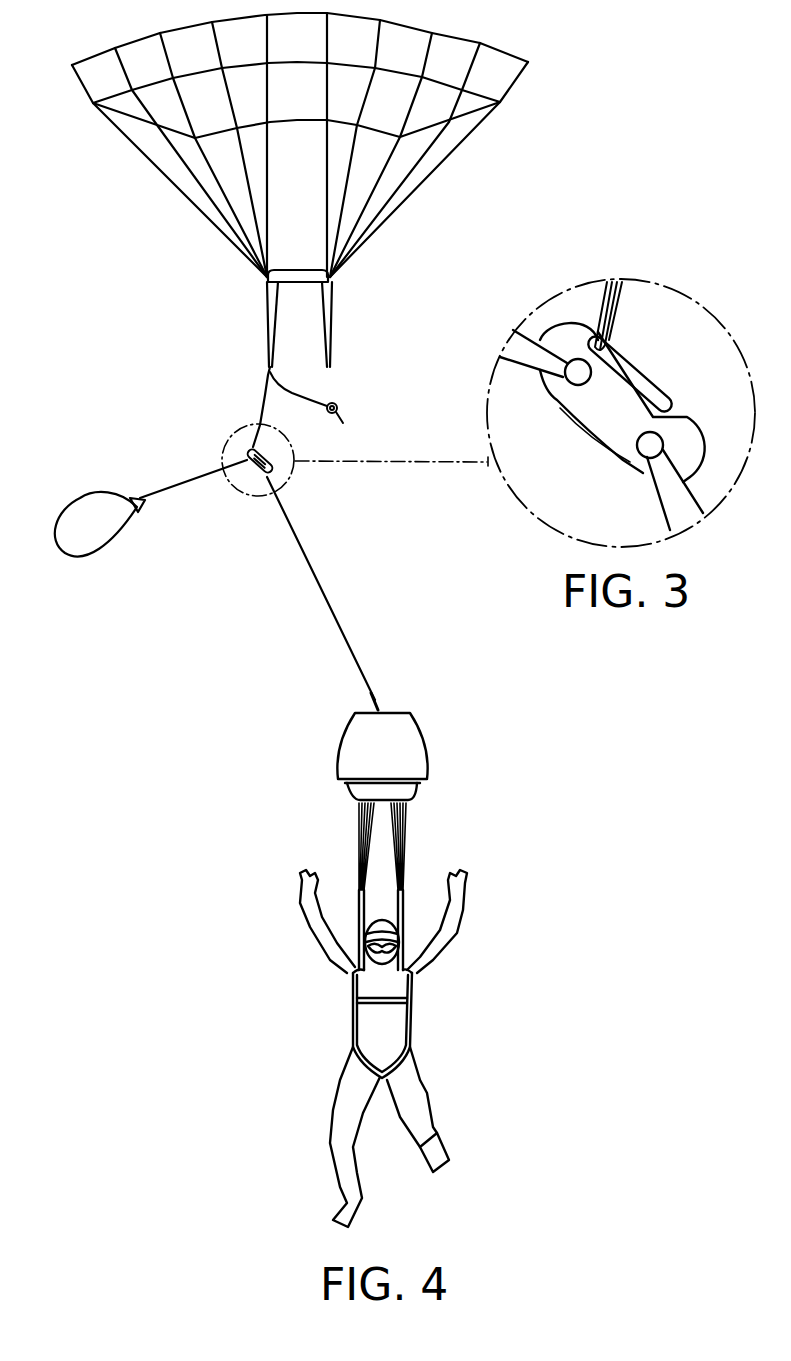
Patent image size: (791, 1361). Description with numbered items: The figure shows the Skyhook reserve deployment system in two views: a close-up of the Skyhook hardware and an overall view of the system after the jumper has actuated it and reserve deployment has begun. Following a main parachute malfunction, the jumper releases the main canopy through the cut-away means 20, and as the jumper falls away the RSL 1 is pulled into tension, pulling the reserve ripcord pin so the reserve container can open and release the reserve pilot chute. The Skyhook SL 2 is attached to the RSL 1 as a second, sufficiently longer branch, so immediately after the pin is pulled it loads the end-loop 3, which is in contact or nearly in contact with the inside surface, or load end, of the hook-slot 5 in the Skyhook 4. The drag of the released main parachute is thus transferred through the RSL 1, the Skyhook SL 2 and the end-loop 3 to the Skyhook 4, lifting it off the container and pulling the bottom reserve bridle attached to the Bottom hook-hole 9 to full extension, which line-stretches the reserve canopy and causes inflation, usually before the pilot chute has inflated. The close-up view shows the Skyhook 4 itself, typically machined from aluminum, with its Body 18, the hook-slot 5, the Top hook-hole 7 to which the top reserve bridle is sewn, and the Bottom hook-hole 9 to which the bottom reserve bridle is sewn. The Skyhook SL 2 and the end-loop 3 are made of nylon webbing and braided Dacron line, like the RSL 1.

In FIG. 4, the RSL 1 is at (292, 387).
In FIG. 4, the Skyhook SL 2 is at (265, 390).
In FIG. 4, the end-loop 3 is at (274, 443).
In FIG. 3, the end-loop 3 is at (630, 292).
In FIG. 4, the Skyhook 4 is at (237, 448).
In FIG. 3, the Skyhook 4 is at (553, 322).
In FIG. 3, the hook-slot 5 is at (675, 402).
In FIG. 3, the Top hook-hole 7 is at (570, 400).
In FIG. 3, the Bottom hook-hole 9 is at (633, 472).
In FIG. 3, the Body 18 is at (593, 450).
In FIG. 4, the cut-away means 20 is at (352, 953).